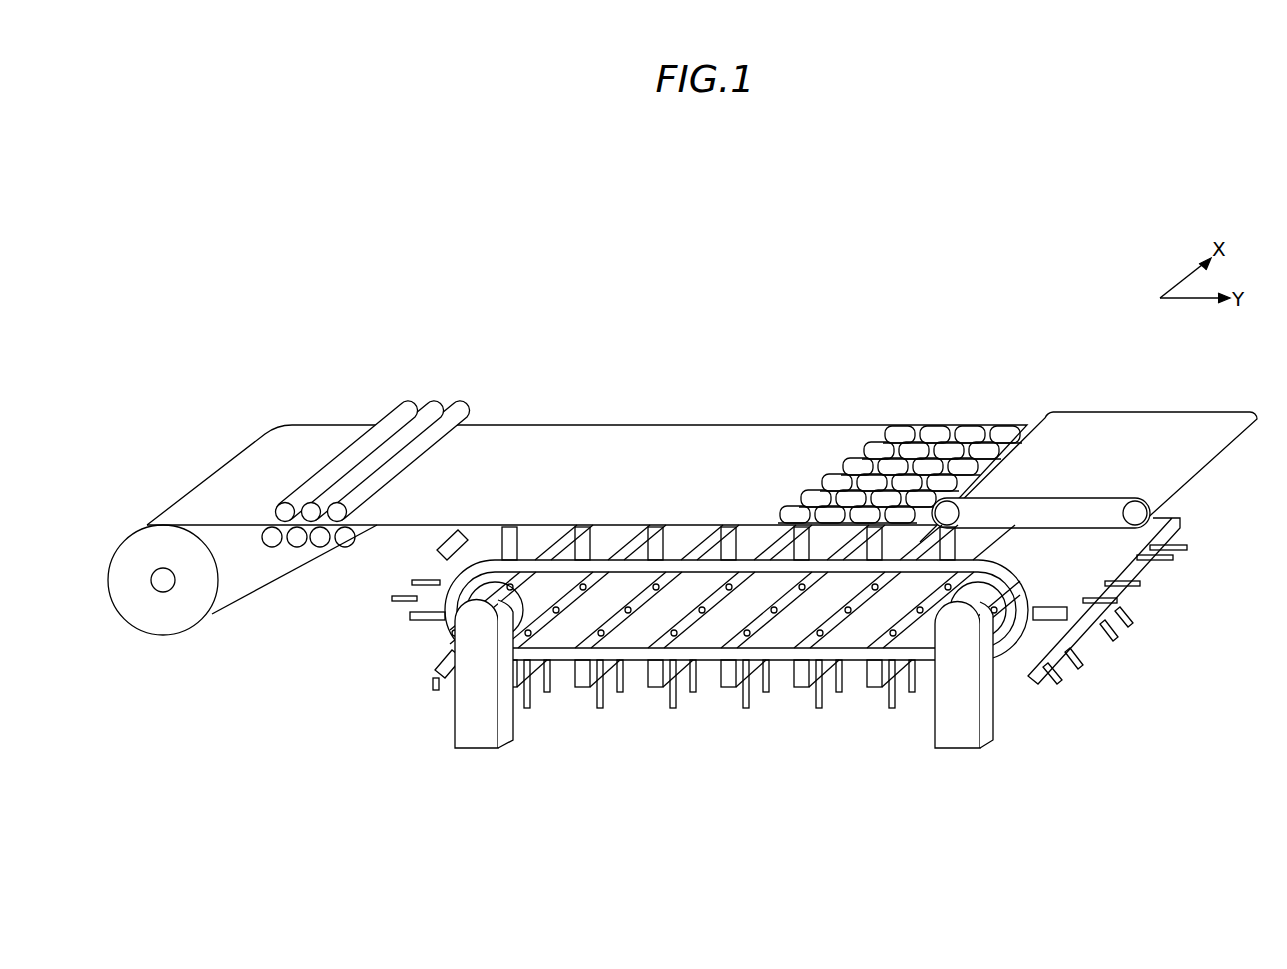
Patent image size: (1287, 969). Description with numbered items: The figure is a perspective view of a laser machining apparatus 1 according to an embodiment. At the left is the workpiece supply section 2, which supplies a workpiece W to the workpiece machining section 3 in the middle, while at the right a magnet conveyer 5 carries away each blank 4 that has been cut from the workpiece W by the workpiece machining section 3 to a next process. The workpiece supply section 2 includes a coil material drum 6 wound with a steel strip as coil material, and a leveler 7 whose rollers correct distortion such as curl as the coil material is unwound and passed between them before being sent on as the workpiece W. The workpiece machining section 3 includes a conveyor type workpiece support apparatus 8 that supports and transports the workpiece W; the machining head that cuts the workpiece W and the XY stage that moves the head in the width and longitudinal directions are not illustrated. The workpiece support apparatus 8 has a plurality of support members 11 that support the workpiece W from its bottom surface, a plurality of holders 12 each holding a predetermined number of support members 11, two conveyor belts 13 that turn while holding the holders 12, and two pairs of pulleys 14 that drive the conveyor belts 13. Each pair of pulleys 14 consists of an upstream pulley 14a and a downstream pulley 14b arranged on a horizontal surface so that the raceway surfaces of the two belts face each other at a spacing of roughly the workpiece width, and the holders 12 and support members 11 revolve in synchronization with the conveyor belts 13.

The laser machining apparatus 1 is at (385, 237).
The workpiece supply section 2 is at (342, 363).
The workpiece machining section 3 is at (794, 358).
The blank 4 is at (893, 428).
The magnet conveyer 5 is at (1150, 412).
The coil material drum 6 is at (247, 444).
The leveler 7 is at (262, 553).
The workpiece support apparatus 8 is at (704, 698).
The support member 11 is at (1118, 638).
The holder 12 is at (1137, 563).
The conveyor belt 13 is at (788, 660).
The pair of pulleys 14 is at (1000, 623).
The pulley 14a is at (470, 590).
The pulley 14b is at (932, 612).
The workpiece W is at (605, 425).